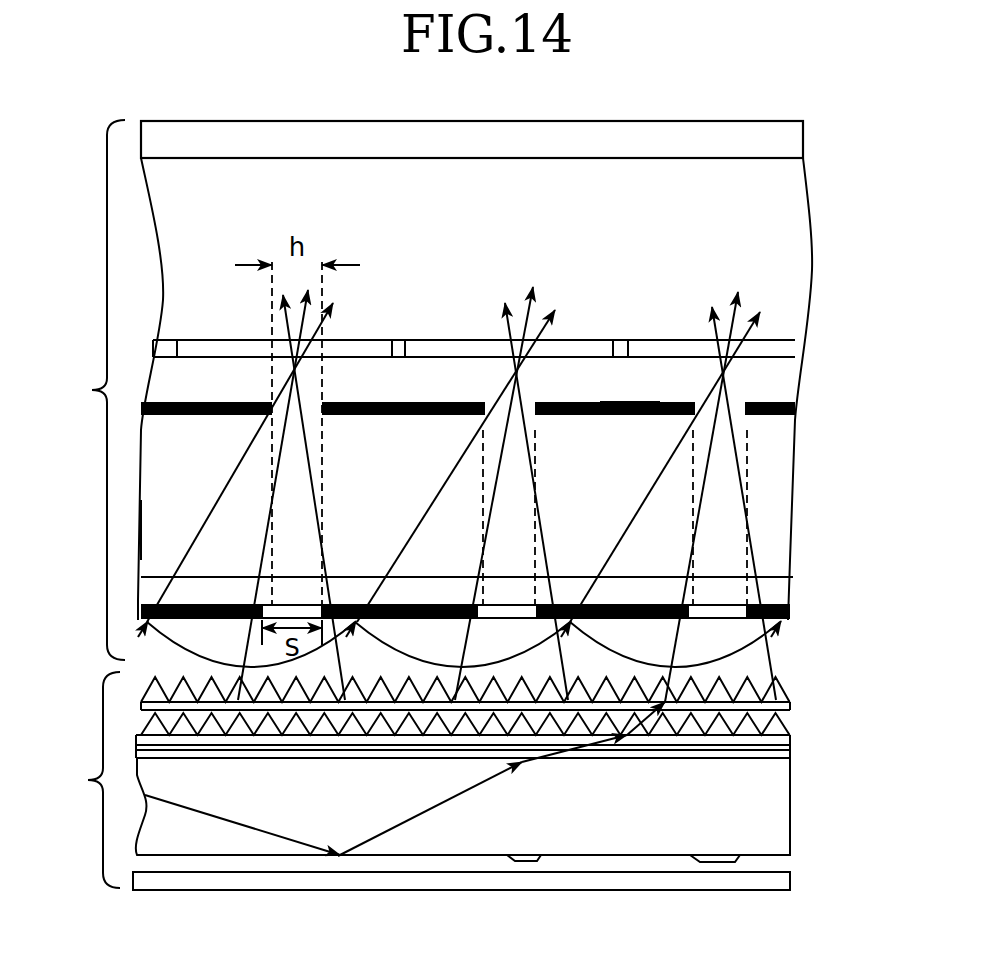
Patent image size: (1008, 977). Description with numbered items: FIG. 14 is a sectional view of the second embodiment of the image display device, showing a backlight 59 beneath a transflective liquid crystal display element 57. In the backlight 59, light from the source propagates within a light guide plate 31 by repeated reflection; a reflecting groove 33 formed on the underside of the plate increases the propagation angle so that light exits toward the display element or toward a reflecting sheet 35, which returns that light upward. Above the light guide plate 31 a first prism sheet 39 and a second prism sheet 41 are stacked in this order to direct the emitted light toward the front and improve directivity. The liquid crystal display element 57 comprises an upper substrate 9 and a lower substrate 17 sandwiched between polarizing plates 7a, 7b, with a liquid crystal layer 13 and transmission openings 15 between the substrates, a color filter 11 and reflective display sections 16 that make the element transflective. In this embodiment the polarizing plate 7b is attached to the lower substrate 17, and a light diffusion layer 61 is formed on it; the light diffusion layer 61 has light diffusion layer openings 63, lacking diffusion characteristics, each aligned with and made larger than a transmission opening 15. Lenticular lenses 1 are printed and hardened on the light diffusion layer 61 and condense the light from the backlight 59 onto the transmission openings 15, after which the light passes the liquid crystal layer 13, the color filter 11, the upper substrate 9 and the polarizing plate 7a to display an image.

The polarizing plate 7a is at (785, 142).
The reflective display section 16 is at (627, 403).
The upper substrate 9 is at (785, 283).
The color filter 11 is at (790, 351).
The liquid crystal layer 13 is at (778, 382).
The transmission opening 15 is at (782, 428).
The lower substrate 17 is at (770, 492).
The light diffusion layer opening 63 is at (722, 572).
The polarizing plate 7b is at (773, 585).
The light diffusion layer 61 is at (787, 612).
The lenticular lens 1 is at (722, 637).
The second prism sheet 41 is at (795, 690).
The first prism sheet 39 is at (795, 738).
The light guide plate 31 is at (770, 820).
The reflecting groove 33 is at (540, 858).
The reflecting sheet 35 is at (795, 890).
The liquid crystal display element 57 is at (86, 390).
The backlight 59 is at (83, 780).